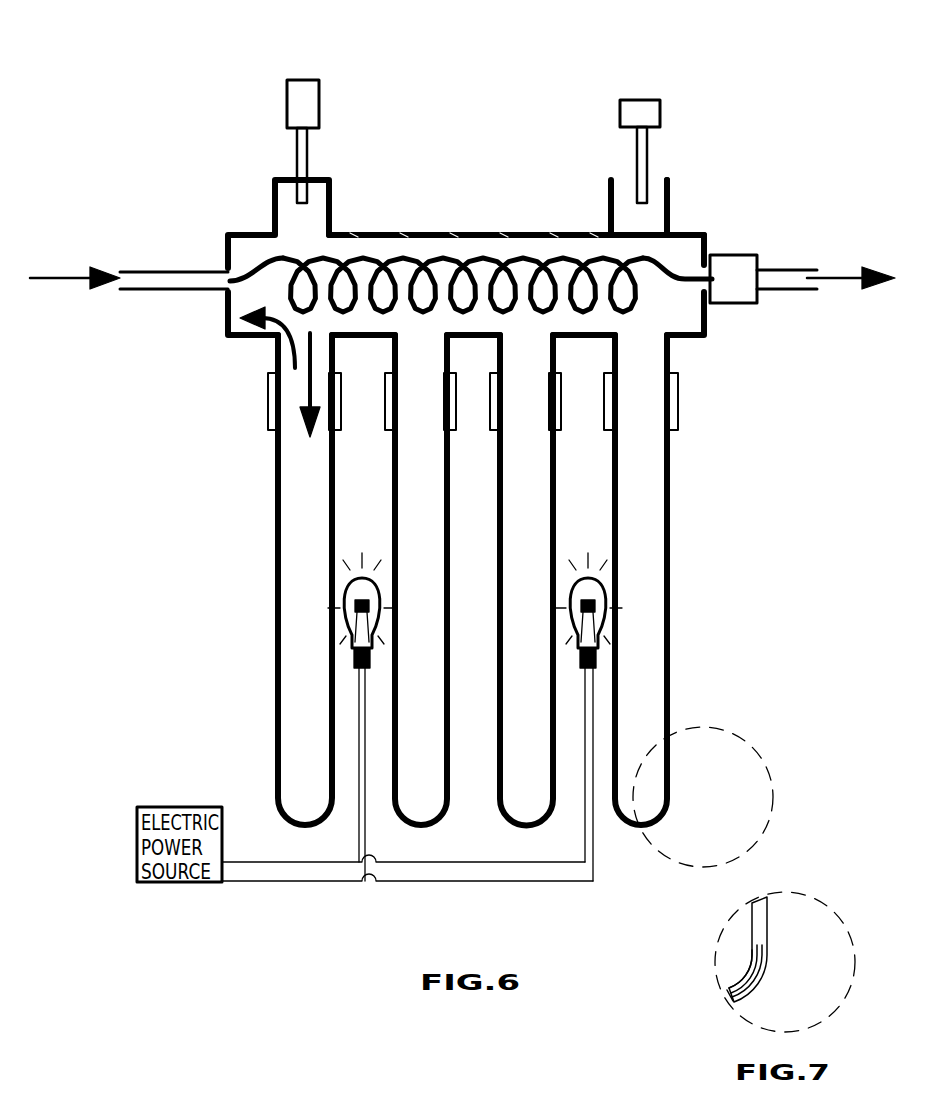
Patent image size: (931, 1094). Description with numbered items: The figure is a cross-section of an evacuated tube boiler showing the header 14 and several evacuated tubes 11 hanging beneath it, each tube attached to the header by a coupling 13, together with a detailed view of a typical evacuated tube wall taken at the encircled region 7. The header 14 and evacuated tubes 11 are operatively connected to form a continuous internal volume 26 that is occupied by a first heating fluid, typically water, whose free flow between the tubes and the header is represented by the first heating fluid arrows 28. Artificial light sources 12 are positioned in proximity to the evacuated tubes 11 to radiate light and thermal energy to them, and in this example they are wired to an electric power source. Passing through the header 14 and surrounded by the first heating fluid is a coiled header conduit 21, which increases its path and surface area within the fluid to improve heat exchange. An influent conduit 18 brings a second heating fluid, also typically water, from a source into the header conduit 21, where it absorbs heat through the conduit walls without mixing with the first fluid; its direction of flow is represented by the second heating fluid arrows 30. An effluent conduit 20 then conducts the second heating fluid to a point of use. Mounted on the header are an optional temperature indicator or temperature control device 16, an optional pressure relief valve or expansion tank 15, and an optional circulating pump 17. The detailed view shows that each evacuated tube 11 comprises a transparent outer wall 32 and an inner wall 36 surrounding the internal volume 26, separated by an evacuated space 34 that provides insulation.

In FIG. 6, the detail view region 7 is at (742, 730).
In FIG. 6, the evacuated tube 11 is at (673, 590).
In FIG. 7, the evacuated tube 11 is at (775, 920).
In FIG. 6, the artificial light source 12 is at (350, 562).
In FIG. 6, the coupling 13 is at (270, 420).
In FIG. 6, the header 14 is at (402, 232).
In FIG. 6, the pressure relief valve and/or expansion tank 15 is at (643, 108).
In FIG. 6, the temperature indicator and/or temperature control device 16 is at (303, 90).
In FIG. 6, the circulating pump 17 is at (728, 258).
In FIG. 6, the influent conduit 18 is at (163, 290).
In FIG. 6, the effluent conduit 20 is at (780, 268).
In FIG. 6, the header conduit 21 is at (493, 252).
In FIG. 6, the internal volume 26 is at (258, 255).
In FIG. 7, the internal volume 26 is at (735, 980).
In FIG. 6, the first heating fluid arrows 28 is at (305, 383).
In FIG. 6, the second heating fluid arrows 30 is at (45, 283).
In FIG. 7, the transparent outer wall 32 is at (766, 943).
In FIG. 7, the evacuated space 34 is at (768, 960).
In FIG. 7, the inner wall 36 is at (760, 975).